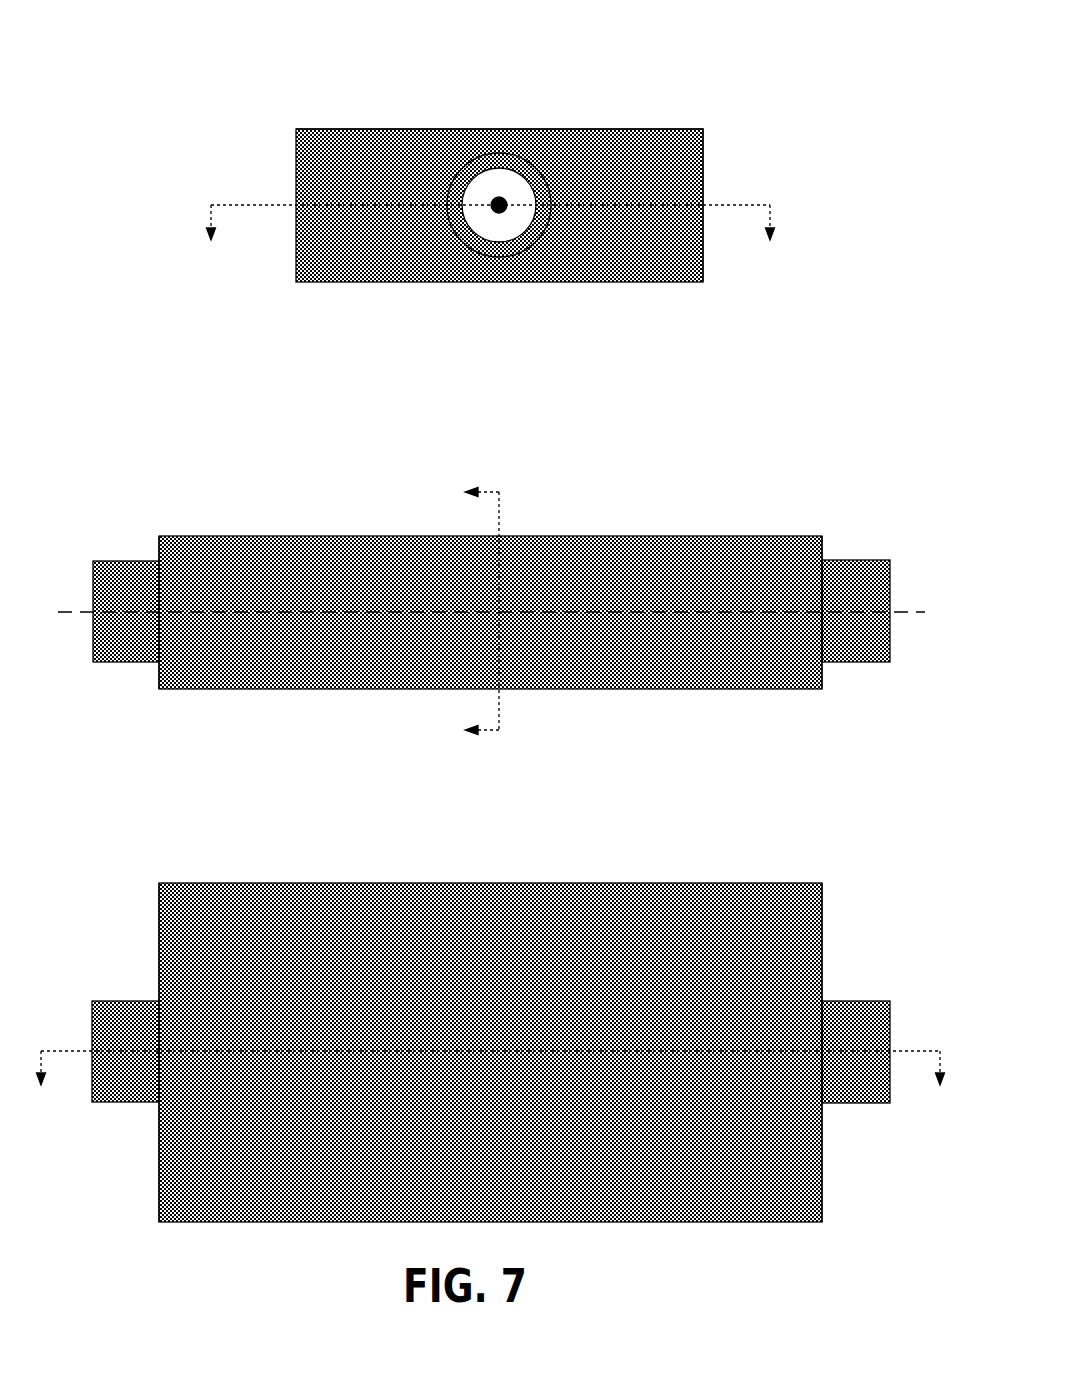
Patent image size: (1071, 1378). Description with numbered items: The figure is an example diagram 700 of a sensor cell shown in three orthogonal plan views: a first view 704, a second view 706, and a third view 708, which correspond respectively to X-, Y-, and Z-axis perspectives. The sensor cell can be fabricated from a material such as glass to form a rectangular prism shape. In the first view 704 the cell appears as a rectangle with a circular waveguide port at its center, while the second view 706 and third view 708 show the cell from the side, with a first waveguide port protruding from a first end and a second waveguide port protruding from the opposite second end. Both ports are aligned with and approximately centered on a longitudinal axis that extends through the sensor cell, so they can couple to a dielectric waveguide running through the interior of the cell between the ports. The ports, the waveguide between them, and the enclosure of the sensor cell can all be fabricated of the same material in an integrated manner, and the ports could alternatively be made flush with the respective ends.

The diagram 700 is at (116, 50).
The first view 704 is at (126, 160).
The second view 706 is at (131, 491).
The third view 708 is at (127, 851).